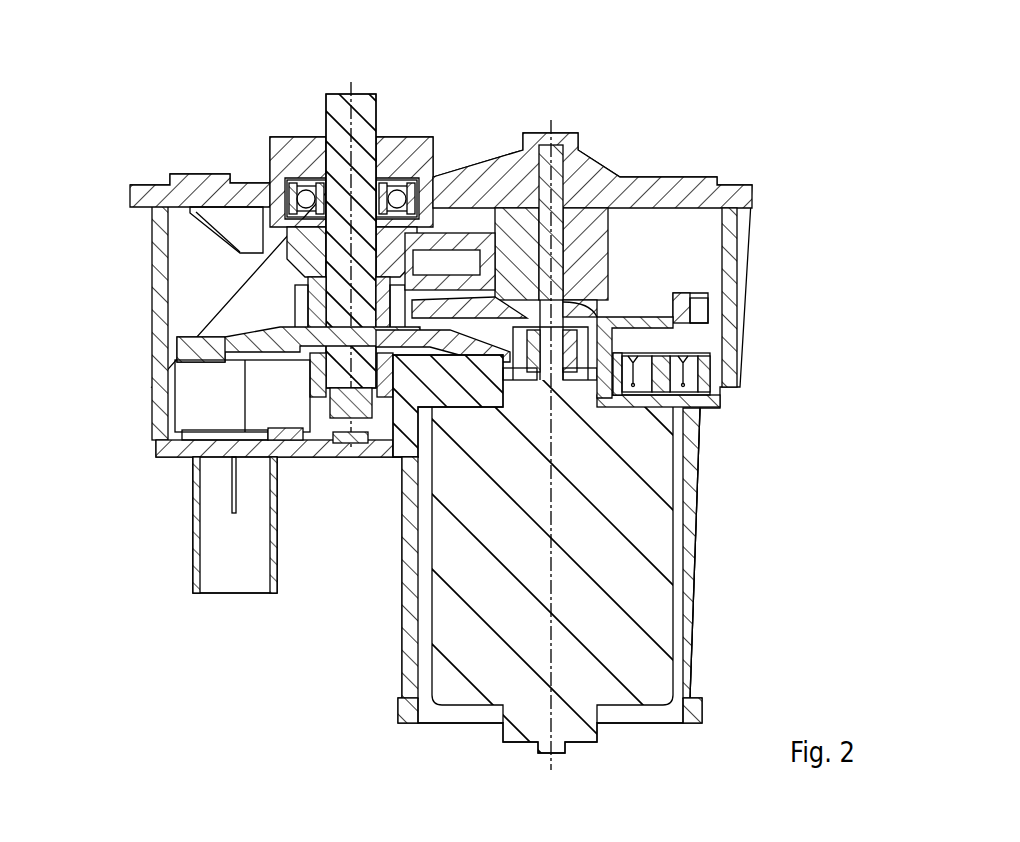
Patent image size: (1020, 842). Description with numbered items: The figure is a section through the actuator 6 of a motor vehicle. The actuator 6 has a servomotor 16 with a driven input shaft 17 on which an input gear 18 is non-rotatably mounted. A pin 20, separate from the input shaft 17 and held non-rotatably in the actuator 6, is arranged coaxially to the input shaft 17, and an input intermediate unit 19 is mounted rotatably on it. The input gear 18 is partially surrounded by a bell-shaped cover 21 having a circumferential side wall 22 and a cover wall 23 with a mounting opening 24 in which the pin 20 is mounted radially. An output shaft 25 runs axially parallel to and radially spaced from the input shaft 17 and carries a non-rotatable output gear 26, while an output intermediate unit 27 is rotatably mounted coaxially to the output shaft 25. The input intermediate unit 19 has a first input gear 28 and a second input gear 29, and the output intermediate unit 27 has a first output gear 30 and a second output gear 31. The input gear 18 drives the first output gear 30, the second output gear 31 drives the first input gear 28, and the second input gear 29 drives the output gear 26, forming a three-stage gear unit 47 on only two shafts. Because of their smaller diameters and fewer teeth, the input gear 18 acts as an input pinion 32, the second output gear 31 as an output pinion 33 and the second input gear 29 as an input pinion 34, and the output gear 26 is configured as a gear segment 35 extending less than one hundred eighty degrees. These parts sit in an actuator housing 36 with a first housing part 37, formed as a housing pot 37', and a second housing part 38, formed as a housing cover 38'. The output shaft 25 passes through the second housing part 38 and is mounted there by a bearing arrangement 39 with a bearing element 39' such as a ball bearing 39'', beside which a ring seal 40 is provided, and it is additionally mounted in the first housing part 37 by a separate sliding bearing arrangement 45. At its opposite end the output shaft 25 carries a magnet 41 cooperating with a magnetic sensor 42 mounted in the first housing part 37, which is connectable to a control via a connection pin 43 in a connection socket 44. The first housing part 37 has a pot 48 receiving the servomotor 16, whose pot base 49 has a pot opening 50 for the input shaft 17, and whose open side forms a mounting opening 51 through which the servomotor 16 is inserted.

The actuator 6 is at (808, 188).
The servomotor 16 is at (656, 536).
The input shaft 17 is at (640, 375).
The input gear 18 is at (565, 403).
The input intermediate unit 19 is at (702, 268).
The pin 20 is at (551, 158).
The cover 21 is at (625, 328).
The side wall 22 is at (607, 388).
The cover wall 23 is at (594, 300).
The mounting opening 24 is at (563, 280).
The output shaft 25 is at (352, 108).
The output gear 26 is at (234, 239).
The output intermediate unit 27 is at (198, 274).
The first input gear 28 is at (682, 308).
The second input gear 29 is at (609, 212).
The first output gear 30 is at (185, 355).
The second output gear 31 is at (235, 307).
The input pinion 32 is at (562, 385).
The output pinion 33 is at (320, 303).
The input pinion 34 is at (586, 216).
The gear segment 35 is at (303, 243).
The actuator housing 36 is at (152, 411).
The first housing part 37 is at (620, 565).
The housing pot 37' is at (620, 565).
The second housing part 38 is at (592, 159).
The housing cover 38' is at (592, 159).
The bearing arrangement 39 is at (309, 151).
The bearing element 39' is at (396, 151).
The ball bearing 39'' is at (299, 155).
The ring seal 40 is at (436, 148).
The magnet 41 is at (328, 420).
The magnetic sensor 42 is at (350, 445).
The connection pin 43 is at (232, 488).
The connection socket 44 is at (194, 542).
The bearing arrangement 45 is at (312, 392).
The gear unit 47 is at (278, 338).
The pot 48 is at (707, 628).
The pot base 49 is at (627, 405).
The pot opening 50 is at (528, 382).
The mounting opening 51 is at (641, 718).